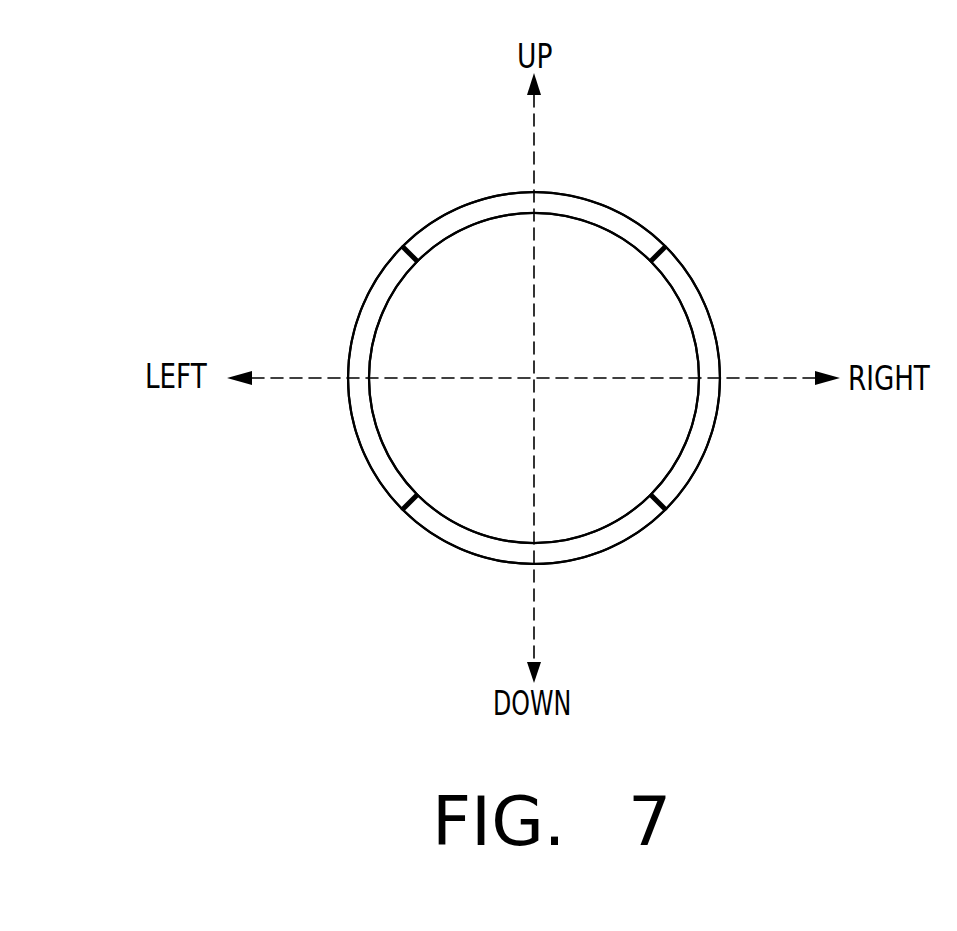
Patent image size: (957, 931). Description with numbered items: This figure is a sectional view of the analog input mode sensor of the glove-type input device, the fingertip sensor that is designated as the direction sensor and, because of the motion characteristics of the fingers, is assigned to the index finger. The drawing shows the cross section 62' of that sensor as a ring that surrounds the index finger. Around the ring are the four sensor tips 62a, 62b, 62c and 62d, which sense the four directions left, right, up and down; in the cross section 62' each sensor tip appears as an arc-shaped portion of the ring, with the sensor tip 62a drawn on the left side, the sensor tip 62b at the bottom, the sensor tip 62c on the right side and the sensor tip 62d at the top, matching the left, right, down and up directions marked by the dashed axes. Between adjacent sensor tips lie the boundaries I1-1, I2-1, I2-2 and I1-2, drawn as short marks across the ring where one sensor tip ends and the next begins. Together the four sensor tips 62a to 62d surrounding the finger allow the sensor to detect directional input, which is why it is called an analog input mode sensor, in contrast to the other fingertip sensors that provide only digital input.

The cross section of the analog input mode sensor 62' is at (599, 302).
The sensor tip 62a is at (367, 307).
The sensor tip 62b is at (603, 548).
The sensor tip 62c is at (703, 322).
The sensor tip 62d is at (603, 212).
The boundary between sensor tips I1-1 is at (410, 252).
The boundary between sensor tips I1-2 is at (662, 508).
The boundary between sensor tips I2-1 is at (660, 252).
The boundary between sensor tips I2-2 is at (408, 505).